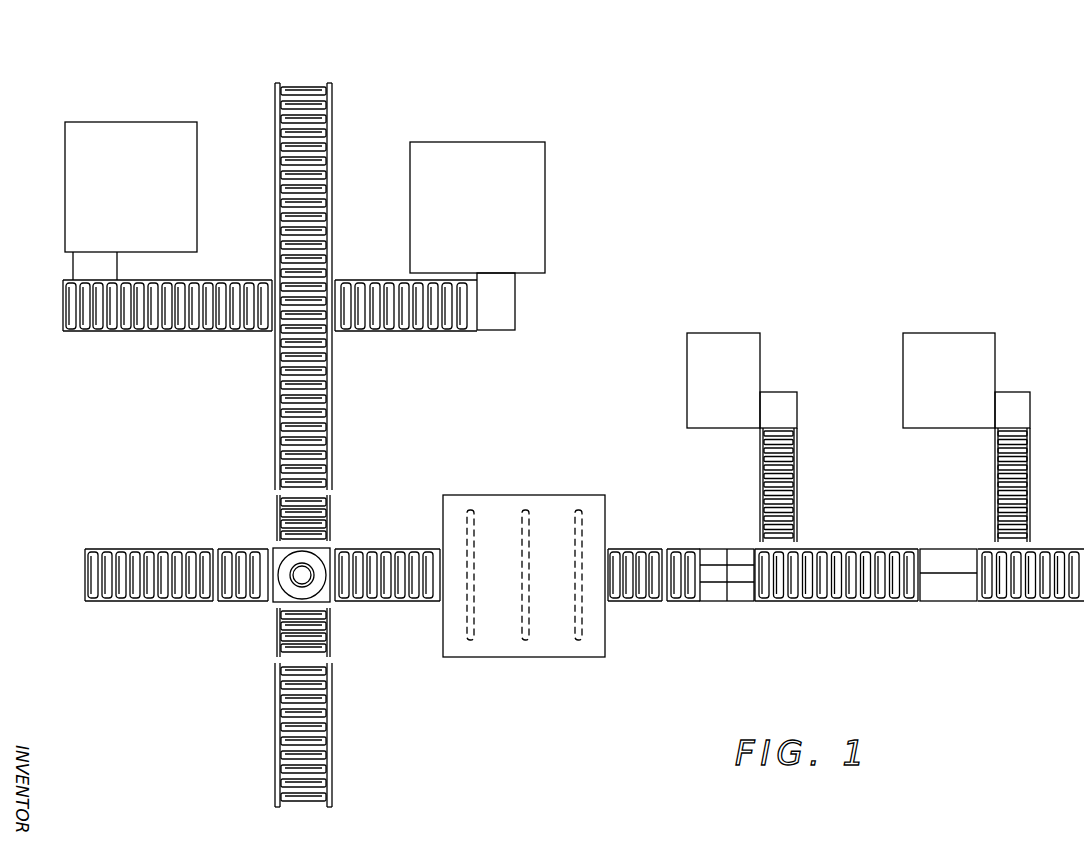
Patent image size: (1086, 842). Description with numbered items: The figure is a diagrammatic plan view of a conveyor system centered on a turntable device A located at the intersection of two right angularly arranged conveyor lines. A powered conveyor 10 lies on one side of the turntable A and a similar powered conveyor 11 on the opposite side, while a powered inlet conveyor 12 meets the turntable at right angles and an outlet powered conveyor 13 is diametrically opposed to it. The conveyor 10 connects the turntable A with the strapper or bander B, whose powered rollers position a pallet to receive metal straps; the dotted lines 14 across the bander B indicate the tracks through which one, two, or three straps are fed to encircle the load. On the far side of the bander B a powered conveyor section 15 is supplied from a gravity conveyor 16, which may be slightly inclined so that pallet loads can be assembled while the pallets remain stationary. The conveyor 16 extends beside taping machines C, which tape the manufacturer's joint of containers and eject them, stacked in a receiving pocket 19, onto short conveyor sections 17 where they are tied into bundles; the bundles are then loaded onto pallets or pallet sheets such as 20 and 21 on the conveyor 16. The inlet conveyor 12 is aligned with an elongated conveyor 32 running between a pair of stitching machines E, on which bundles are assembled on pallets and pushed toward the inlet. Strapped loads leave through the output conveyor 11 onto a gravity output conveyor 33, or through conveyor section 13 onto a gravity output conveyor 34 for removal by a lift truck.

The powered conveyor 10 is at (396, 555).
The powered conveyor 11 is at (252, 598).
The powered inlet conveyor 12 is at (322, 512).
The outlet powered conveyor 13 is at (320, 637).
The tracks 14 is at (578, 613).
The powered conveyor section 15 is at (641, 552).
The gravity conveyor 16 is at (865, 592).
The short conveyor sections 17 is at (795, 492).
The receiving pocket 19 is at (788, 408).
The pallet or pallet sheet 20 is at (740, 592).
The pallet or pallet sheet 21 is at (965, 592).
The elongated conveyor 32 is at (332, 397).
The output conveyor 33 is at (152, 553).
The output conveyor 34 is at (320, 735).
The turntable device A is at (286, 565).
The strapper or bander B is at (524, 571).
The taping machines C is at (735, 364).
The stitching machines E is at (96, 171).